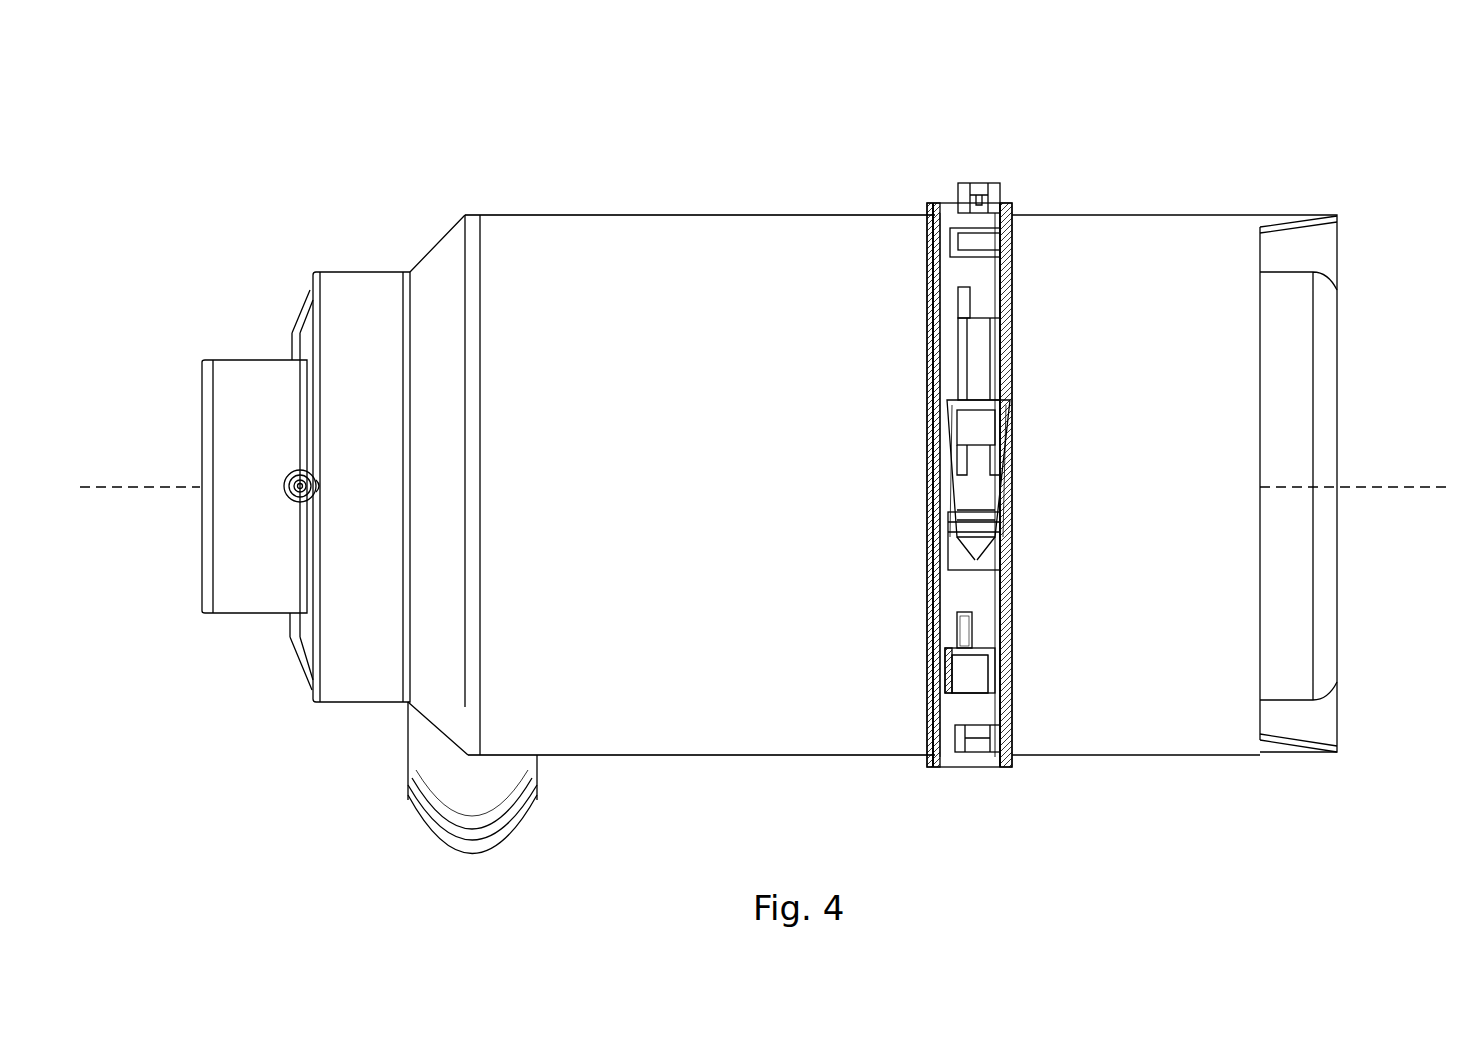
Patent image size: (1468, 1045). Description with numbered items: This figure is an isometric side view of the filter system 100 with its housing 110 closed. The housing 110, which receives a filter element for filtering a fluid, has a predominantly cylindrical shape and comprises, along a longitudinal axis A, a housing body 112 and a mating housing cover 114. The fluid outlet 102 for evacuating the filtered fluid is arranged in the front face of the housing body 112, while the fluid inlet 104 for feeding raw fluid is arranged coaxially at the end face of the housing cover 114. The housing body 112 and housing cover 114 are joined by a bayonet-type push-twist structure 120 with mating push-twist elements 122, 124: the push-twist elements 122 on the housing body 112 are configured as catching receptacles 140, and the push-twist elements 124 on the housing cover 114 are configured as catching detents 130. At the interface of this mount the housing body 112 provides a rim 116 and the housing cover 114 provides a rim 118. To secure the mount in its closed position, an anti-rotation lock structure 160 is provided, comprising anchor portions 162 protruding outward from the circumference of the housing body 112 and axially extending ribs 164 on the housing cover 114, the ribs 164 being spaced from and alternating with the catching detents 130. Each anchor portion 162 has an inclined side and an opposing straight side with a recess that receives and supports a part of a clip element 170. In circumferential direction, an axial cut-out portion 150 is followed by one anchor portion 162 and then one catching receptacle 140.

The filter system 100 is at (1062, 170).
The fluid outlet 102 is at (202, 542).
The fluid inlet 104 is at (1315, 238).
The housing 110 is at (530, 212).
The housing body 112 is at (743, 214).
The housing cover 114 is at (1200, 245).
The rim 116 is at (947, 280).
The rim 118 is at (970, 543).
The push-twist structure 120 is at (925, 590).
The push-twist element 122 is at (985, 680).
The push-twist element 124 is at (987, 643).
The catching detent 130 is at (964, 631).
The catching receptacle 140 is at (970, 674).
The axial cut-out portion 150 is at (967, 253).
The anti-rotation lock structure 160 is at (895, 457).
The anchor portion 162 is at (977, 184).
The rib 164 is at (977, 528).
The clip element 170 is at (1000, 377).
The longitudinal axis A is at (92, 487).